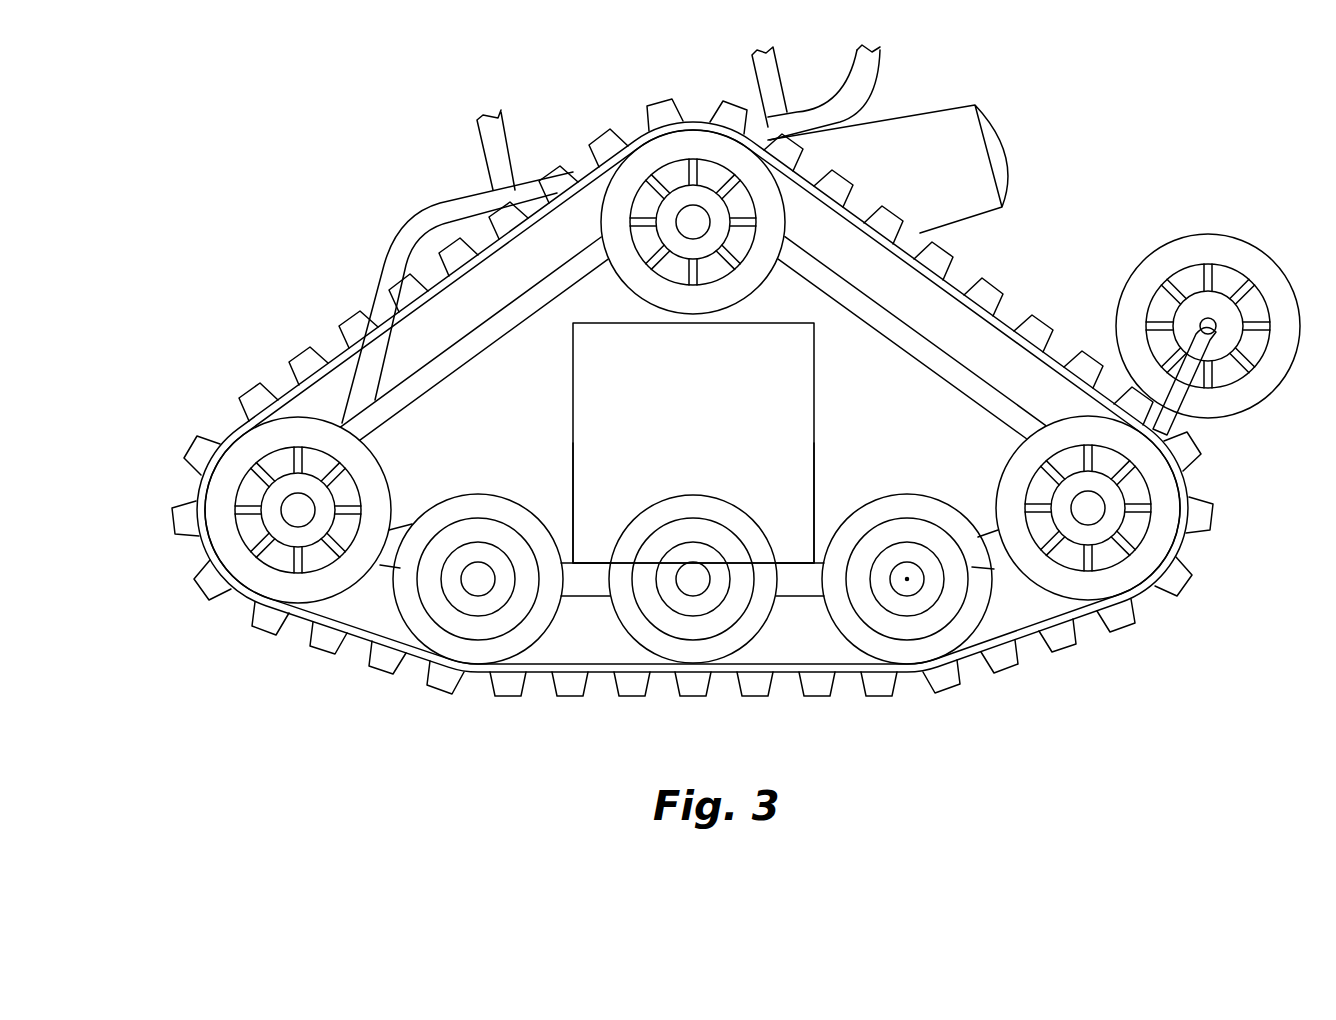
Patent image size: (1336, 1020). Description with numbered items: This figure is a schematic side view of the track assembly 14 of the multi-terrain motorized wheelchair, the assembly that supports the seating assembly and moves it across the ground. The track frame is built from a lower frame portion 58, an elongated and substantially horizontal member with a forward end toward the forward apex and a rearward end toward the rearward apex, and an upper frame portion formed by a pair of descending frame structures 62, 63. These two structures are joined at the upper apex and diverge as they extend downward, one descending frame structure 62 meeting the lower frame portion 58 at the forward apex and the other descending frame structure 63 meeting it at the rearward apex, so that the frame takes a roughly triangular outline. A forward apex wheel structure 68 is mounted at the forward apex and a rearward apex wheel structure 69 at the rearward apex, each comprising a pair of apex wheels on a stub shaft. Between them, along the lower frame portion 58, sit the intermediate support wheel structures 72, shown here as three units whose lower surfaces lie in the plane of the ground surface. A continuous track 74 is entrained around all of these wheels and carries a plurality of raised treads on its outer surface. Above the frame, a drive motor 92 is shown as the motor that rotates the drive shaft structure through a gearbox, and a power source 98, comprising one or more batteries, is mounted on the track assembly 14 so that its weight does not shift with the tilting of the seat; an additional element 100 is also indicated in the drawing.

The track assembly 14 is at (792, 704).
The lower frame portion 58 is at (598, 594).
The descending frame structure 62 is at (455, 342).
The descending frame structure 63 is at (1003, 410).
The forward apex wheel structure 68 is at (228, 548).
The rearward apex wheel structure 69 is at (1162, 549).
The intermediate support wheel structure 72 is at (699, 636).
The continuous track 74 is at (933, 278).
The drive motor 92 is at (953, 142).
The power source 98 is at (774, 340).
The housing lower portion 100 is at (757, 478).